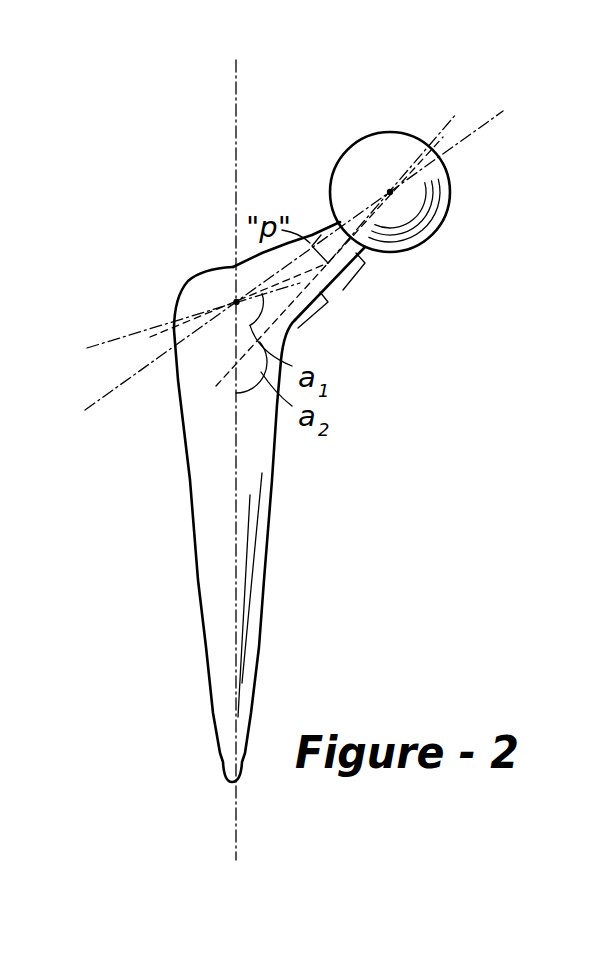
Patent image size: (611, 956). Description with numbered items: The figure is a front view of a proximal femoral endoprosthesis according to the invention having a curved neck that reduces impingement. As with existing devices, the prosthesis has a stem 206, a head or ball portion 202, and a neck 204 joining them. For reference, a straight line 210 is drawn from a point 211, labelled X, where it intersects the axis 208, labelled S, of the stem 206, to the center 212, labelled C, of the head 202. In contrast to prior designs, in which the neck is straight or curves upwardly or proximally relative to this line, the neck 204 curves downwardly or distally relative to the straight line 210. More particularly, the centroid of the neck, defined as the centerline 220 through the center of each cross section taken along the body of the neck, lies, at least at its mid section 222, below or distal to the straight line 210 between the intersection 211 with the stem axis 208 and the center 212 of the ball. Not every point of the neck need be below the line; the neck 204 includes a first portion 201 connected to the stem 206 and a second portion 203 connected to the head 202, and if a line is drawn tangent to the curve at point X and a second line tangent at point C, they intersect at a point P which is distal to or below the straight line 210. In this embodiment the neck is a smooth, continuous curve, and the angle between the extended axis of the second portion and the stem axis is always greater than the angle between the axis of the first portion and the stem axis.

The first portion of the neck 201 is at (327, 303).
The head or ball portion 202 is at (434, 234).
The second portion of the neck 203 is at (358, 278).
The neck 204 is at (324, 308).
The stem 206 is at (267, 435).
The axis of the stem 208 is at (237, 89).
The straight line 210 is at (462, 140).
The point "X" 211 is at (236, 302).
The center of the head 212 is at (390, 192).
The centerline of the neck 220 is at (138, 330).
The mid section of the centerline 222 is at (323, 220).